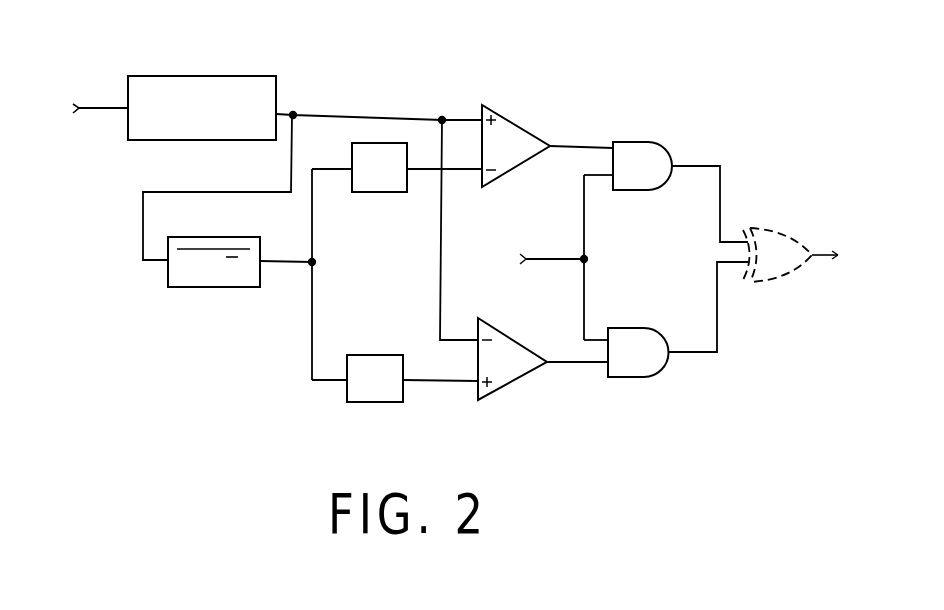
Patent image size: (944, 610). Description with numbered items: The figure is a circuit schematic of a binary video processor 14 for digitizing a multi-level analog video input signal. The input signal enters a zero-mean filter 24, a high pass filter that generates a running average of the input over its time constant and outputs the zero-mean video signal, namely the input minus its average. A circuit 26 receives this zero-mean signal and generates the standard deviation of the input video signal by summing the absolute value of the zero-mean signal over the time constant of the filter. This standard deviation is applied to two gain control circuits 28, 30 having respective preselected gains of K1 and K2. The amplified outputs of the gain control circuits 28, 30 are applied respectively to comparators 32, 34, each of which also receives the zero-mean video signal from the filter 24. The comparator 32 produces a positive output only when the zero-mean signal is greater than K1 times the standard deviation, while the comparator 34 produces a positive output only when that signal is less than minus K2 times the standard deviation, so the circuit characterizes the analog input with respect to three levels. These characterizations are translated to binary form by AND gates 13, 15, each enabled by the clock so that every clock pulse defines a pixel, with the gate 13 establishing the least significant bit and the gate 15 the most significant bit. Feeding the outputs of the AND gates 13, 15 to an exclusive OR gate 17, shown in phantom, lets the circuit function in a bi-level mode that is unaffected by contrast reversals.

The AND gate 13 is at (663, 128).
The video processor 14 is at (587, 91).
The AND gate 15 is at (640, 328).
The exclusive OR gate 17 is at (778, 228).
The zero-mean filter 24 is at (206, 76).
The standard deviation circuit 26 is at (208, 288).
The gain control circuit 28 is at (352, 150).
The gain control circuit 30 is at (376, 355).
The comparator 32 is at (514, 121).
The comparator 34 is at (500, 328).